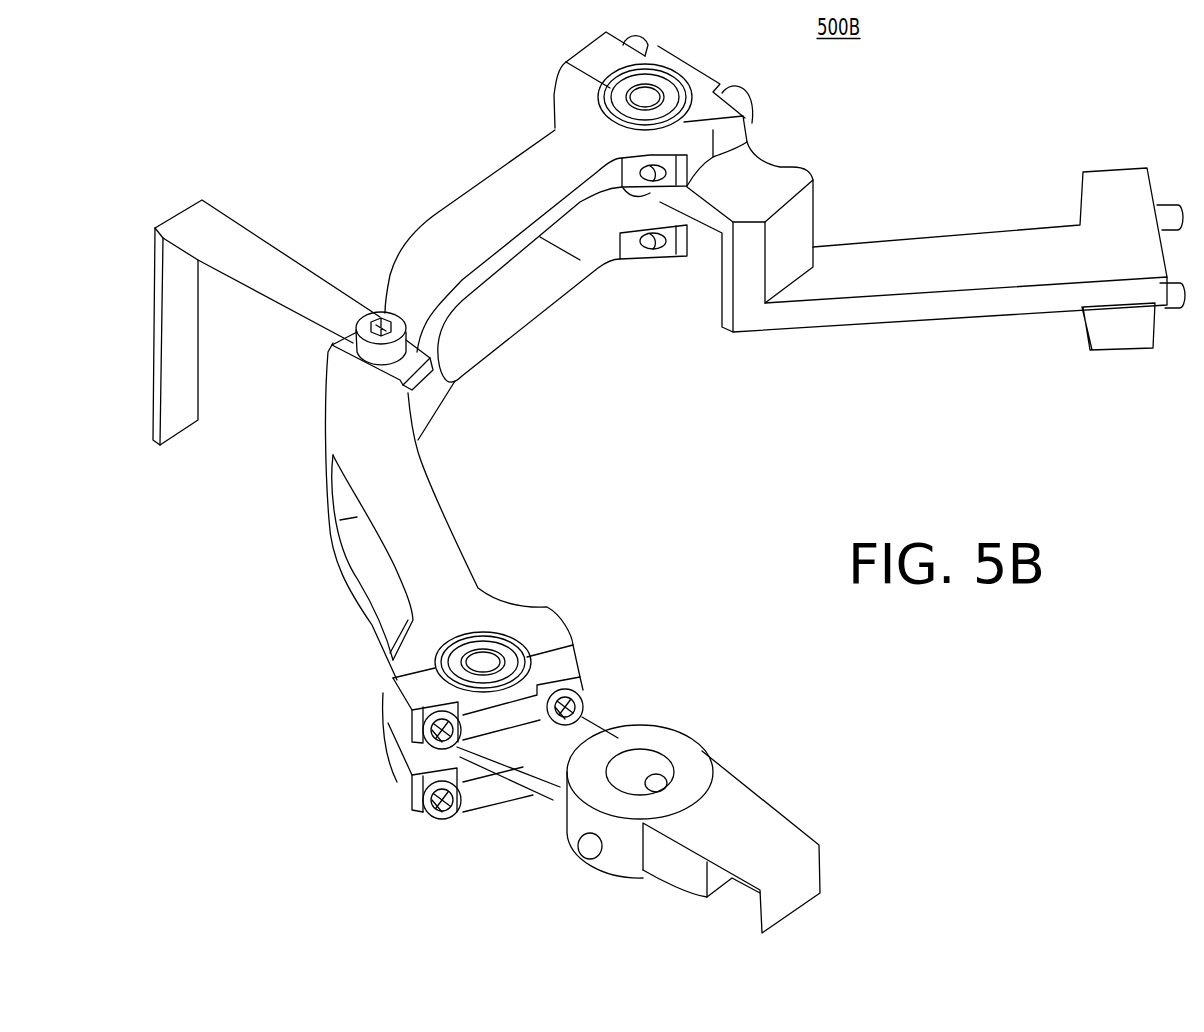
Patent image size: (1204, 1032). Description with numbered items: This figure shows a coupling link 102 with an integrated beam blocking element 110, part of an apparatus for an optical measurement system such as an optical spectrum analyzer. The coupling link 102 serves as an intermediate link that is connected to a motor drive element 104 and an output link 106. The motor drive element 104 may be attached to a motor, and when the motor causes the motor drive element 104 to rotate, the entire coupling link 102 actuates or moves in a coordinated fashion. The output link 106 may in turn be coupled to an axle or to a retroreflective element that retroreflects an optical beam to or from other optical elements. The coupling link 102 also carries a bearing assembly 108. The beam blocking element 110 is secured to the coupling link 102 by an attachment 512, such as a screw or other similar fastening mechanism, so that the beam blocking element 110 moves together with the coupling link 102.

The coupling link 102 is at (550, 120).
The motor drive element 104 is at (757, 803).
The output link 106 is at (1142, 167).
The bearing assembly 108 is at (577, 654).
The beam blocking element 110 is at (195, 220).
The attachment 512 is at (390, 312).